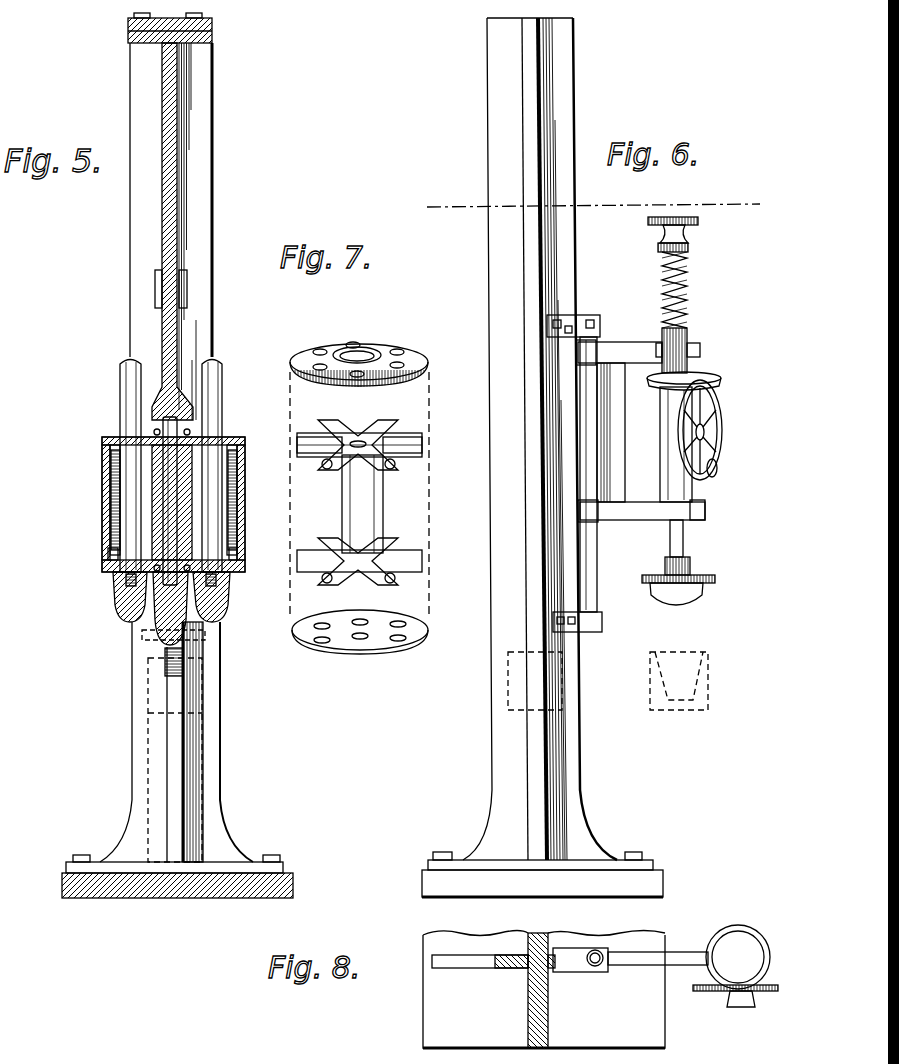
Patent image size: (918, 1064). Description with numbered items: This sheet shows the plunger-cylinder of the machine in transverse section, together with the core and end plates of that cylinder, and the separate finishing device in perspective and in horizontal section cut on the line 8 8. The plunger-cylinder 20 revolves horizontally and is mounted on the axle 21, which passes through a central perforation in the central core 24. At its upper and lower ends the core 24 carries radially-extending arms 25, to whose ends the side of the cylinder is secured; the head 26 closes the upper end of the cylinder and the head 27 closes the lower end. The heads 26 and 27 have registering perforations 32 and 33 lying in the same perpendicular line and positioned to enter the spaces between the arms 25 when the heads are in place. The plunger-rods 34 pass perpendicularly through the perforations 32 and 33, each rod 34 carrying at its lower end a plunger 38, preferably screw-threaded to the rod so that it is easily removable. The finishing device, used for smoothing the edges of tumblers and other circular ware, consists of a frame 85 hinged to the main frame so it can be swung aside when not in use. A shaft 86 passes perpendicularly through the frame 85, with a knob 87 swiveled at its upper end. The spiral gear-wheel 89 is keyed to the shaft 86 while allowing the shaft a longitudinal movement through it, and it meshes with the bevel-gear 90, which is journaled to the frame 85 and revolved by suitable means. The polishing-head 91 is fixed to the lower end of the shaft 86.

In FIG. 6, the section line 8 8 is at (590, 206).
In FIG. 5, the plunger-cylinder 20 is at (102, 548).
In FIG. 5, the axle 21 is at (160, 490).
In FIG. 5, the central core 24 is at (152, 470).
In FIG. 7, the central core 24 is at (342, 500).
In FIG. 5, the radially-extending arms 25 is at (235, 437).
In FIG. 7, the radially-extending arms 25 is at (296, 468).
In FIG. 7, the upper head 26 is at (296, 355).
In FIG. 7, the lower head 27 is at (308, 642).
In FIG. 7, the perforations in upper head 32 is at (404, 354).
In FIG. 7, the perforations in lower head 33 is at (404, 640).
In FIG. 5, the plunger-rods 34 is at (130, 523).
In FIG. 5, the plunger 38 is at (232, 602).
In FIG. 6, the frame 85 is at (630, 342).
In FIG. 8, the frame 85 is at (681, 956).
In FIG. 6, the shaft 86 is at (690, 290).
In FIG. 6, the knob 87 is at (690, 233).
In FIG. 8, the knob 87 is at (738, 957).
In FIG. 6, the spiral gear-wheel 89 is at (690, 375).
In FIG. 8, the spiral gear-wheel 89 is at (766, 940).
In FIG. 6, the bevel-gear 90 is at (722, 412).
In FIG. 8, the bevel-gear 90 is at (766, 985).
In FIG. 6, the polishing-head 91 is at (704, 596).